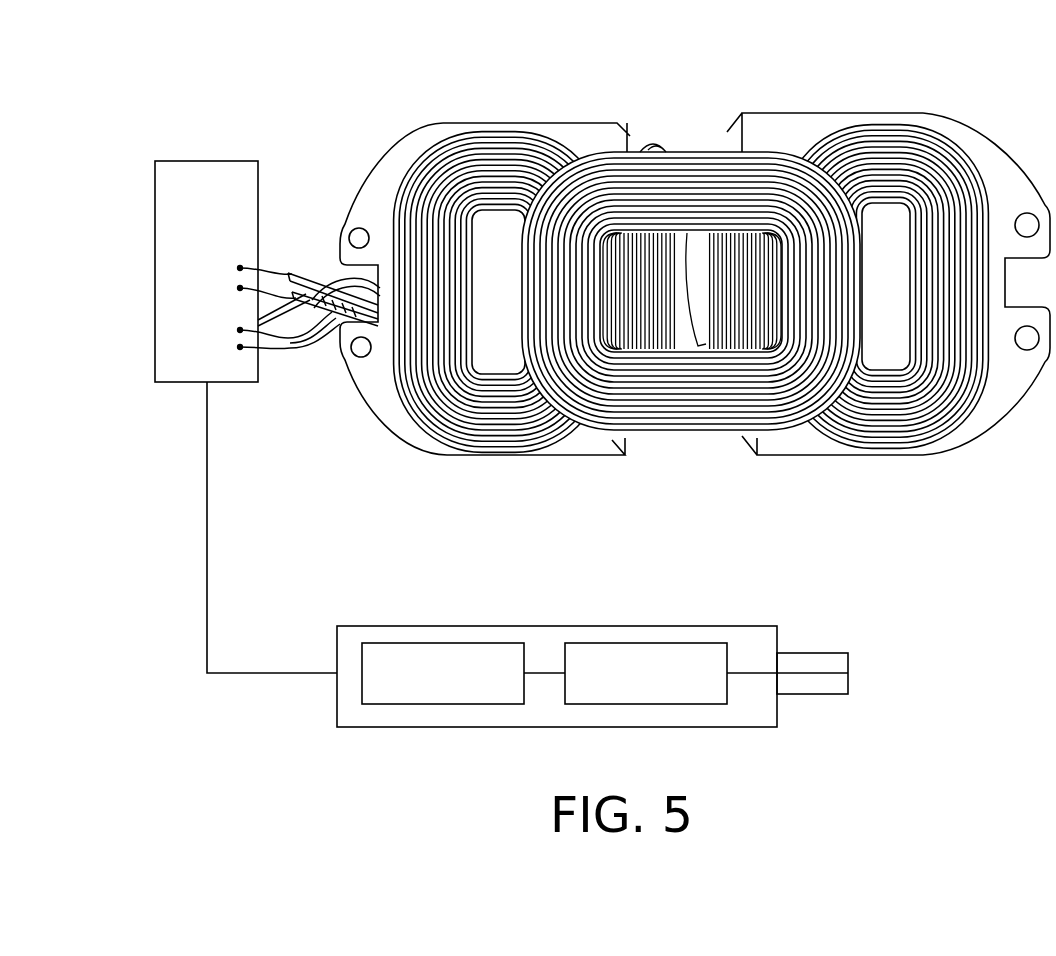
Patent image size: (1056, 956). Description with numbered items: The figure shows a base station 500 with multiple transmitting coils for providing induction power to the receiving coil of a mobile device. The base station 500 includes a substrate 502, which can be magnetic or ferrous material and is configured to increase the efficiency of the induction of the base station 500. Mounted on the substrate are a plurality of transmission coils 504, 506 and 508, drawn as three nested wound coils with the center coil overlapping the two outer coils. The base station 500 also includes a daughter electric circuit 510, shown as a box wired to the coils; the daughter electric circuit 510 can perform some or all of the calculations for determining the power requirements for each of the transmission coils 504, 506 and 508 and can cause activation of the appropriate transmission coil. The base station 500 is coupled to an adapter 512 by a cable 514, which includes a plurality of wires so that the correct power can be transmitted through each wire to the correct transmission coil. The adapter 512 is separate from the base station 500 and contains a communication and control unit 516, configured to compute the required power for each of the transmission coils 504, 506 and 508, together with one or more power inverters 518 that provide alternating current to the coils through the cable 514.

The base station 500 is at (118, 70).
The substrate 502 is at (445, 128).
The transmission coil 504 is at (548, 155).
The transmission coil 506 is at (700, 150).
The transmission coil 508 is at (833, 138).
The daughter electric circuit 510 is at (210, 190).
The adapter 512 is at (592, 693).
The cable 514 is at (207, 520).
The communication and control unit 516 is at (664, 684).
The power inverter 518 is at (461, 684).